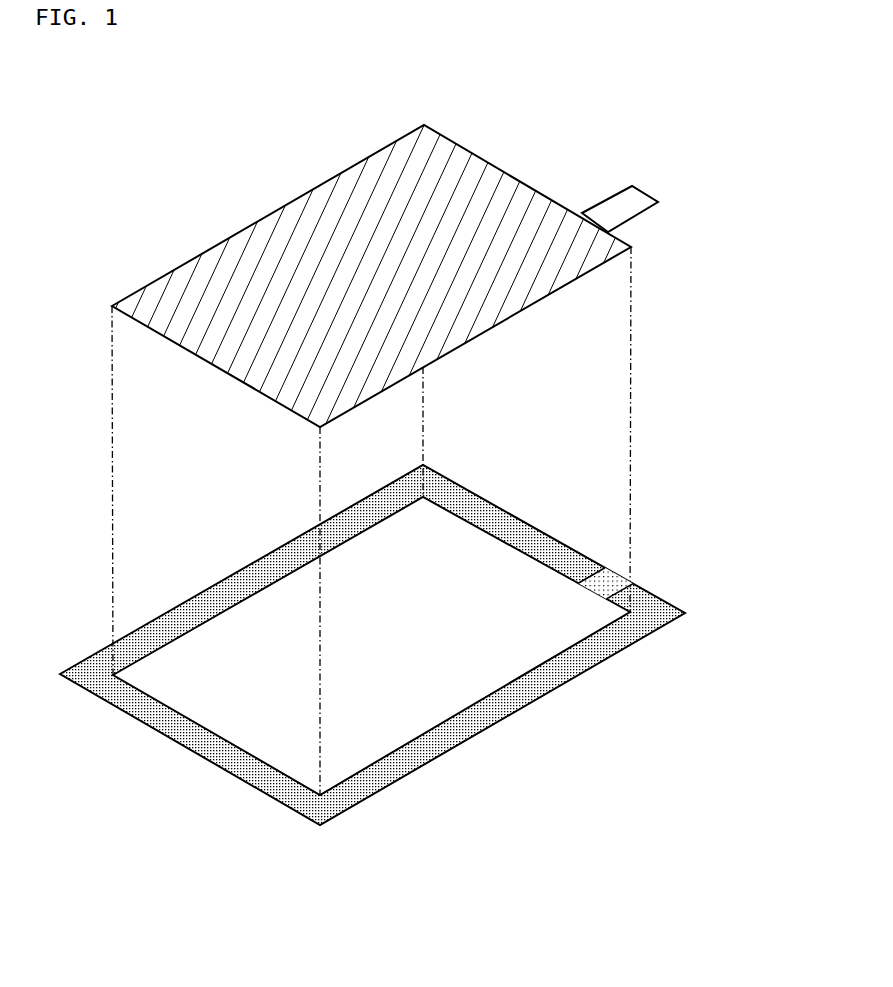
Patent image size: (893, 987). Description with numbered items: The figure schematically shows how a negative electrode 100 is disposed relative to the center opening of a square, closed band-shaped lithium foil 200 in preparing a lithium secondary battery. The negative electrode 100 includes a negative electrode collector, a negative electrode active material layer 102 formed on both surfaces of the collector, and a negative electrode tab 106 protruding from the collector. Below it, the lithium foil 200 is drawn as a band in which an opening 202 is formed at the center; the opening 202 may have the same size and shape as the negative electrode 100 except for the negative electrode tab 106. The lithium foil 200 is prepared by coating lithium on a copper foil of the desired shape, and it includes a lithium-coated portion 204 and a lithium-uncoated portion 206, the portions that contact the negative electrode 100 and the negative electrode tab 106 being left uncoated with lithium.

The negative electrode 100 is at (387, 435).
The negative electrode active material layer 102 is at (362, 205).
The negative electrode tab 106 is at (661, 201).
The lithium foil 200 is at (423, 645).
The opening 202 is at (447, 680).
The lithium-coated portion 204 is at (558, 672).
The lithium-uncoated portion 206 is at (612, 578).